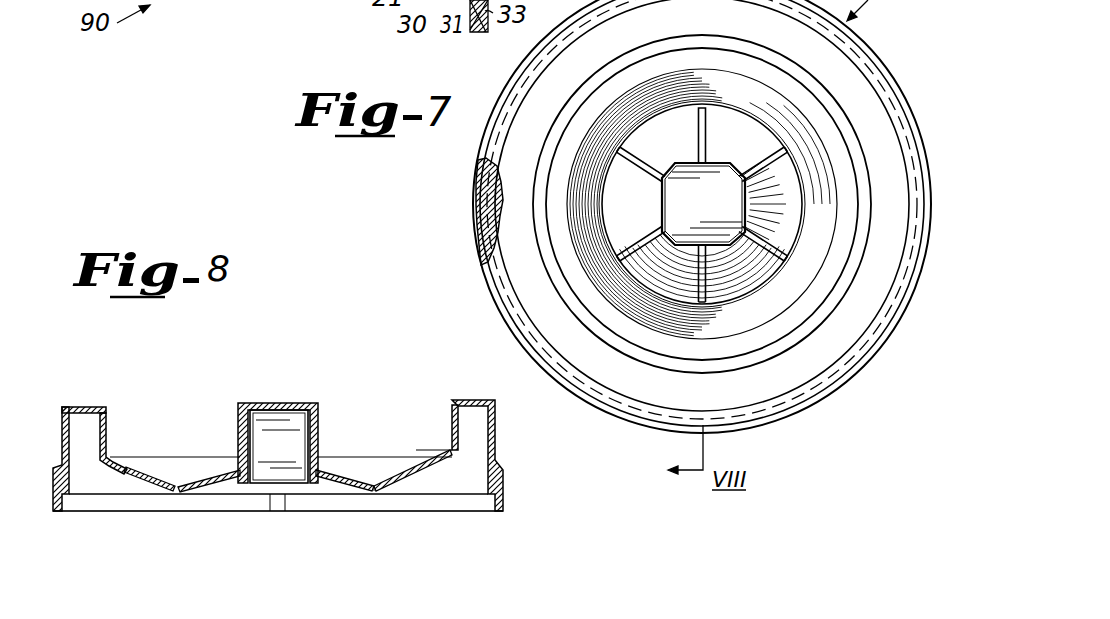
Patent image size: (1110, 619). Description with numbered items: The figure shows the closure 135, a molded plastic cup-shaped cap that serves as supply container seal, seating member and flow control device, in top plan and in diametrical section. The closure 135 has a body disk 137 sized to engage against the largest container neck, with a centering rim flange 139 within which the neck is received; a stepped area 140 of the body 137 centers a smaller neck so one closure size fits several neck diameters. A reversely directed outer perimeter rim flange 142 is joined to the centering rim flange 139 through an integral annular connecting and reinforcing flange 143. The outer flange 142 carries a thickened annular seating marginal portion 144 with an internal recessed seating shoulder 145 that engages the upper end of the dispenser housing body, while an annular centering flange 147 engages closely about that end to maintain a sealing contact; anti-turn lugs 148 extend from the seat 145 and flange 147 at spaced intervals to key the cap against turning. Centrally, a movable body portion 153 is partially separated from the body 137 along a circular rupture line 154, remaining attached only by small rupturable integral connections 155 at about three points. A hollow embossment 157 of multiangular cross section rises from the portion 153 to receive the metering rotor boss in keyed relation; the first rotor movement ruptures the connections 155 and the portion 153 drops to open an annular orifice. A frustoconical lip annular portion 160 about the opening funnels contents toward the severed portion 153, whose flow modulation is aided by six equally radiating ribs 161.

In FIG. 8, the closure 135 is at (550, 480).
In FIG. 7, the body disk 137 is at (847, 130).
In FIG. 8, the body disk 137 is at (113, 462).
In FIG. 8, the centering rim flange 139 is at (110, 427).
In FIG. 7, the stepped area 140 is at (755, 70).
In FIG. 8, the stepped area 140 is at (137, 458).
In FIG. 7, the outer perimeter rim flange 142 is at (475, 227).
In FIG. 8, the outer perimeter rim flange 142 is at (62, 432).
In FIG. 7, the connecting and reinforcing flange 143 is at (522, 280).
In FIG. 8, the connecting and reinforcing flange 143 is at (85, 405).
In FIG. 8, the seating marginal portion 144 is at (50, 483).
In FIG. 8, the recessed seating shoulder 145 is at (328, 494).
In FIG. 8, the centering flange 147 is at (53, 517).
In FIG. 7, the anti-turn lugs 148 is at (713, 3).
In FIG. 8, the anti-turn lugs 148 is at (270, 500).
In FIG. 7, the movable body portion 153 is at (750, 157).
In FIG. 8, the movable body portion 153 is at (252, 451).
In FIG. 7, the rupture line 154 is at (802, 173).
In FIG. 7, the rupturable integral connections 155 is at (697, 108).
In FIG. 7, the hollow embossment 157 is at (722, 207).
In FIG. 8, the hollow embossment 157 is at (318, 420).
In FIG. 7, the lip annular portion 160 is at (772, 102).
In FIG. 8, the lip annular portion 160 is at (387, 484).
In FIG. 7, the radiating ribs 161 is at (647, 185).
In FIG. 8, the radiating ribs 161 is at (343, 483).